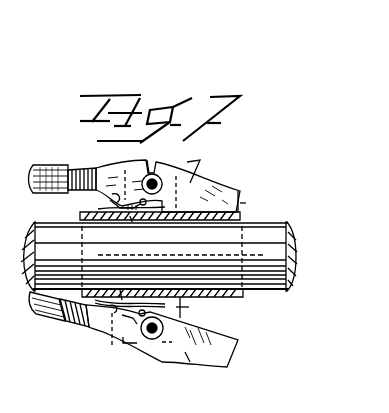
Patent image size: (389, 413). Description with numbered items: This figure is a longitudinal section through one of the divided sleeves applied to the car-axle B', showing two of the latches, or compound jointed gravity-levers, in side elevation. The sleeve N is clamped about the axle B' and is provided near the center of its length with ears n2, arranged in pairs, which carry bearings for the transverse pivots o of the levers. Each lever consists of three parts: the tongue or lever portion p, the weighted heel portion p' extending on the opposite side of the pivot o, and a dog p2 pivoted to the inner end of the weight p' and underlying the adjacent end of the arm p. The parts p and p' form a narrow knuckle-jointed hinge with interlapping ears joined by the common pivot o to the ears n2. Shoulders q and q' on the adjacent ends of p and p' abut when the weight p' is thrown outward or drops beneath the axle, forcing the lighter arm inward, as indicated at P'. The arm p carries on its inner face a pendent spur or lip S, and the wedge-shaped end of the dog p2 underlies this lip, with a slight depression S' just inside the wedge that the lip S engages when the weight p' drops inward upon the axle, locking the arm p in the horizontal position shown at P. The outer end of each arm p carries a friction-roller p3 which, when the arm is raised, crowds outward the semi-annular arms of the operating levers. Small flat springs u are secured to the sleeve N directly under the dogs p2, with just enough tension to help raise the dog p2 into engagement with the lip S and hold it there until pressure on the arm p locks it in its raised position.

The axle B' is at (159, 256).
The sleeve N is at (168, 203).
The ears n2 is at (162, 303).
The compound or jointed gravity-lever P is at (168, 179).
The jointed gravity-lever (inward-thrown position) P' is at (162, 347).
The tongue or lever portion p is at (83, 259).
The friction-roller p3 is at (45, 244).
The dog p2 is at (110, 204).
The weighted heel portion p' is at (188, 370).
The shoulder q is at (139, 161).
The shoulder q' is at (180, 166).
The pivot o is at (153, 178).
The spur or lip S is at (98, 272).
The depression or notch S' is at (127, 286).
The flat spring u is at (131, 220).